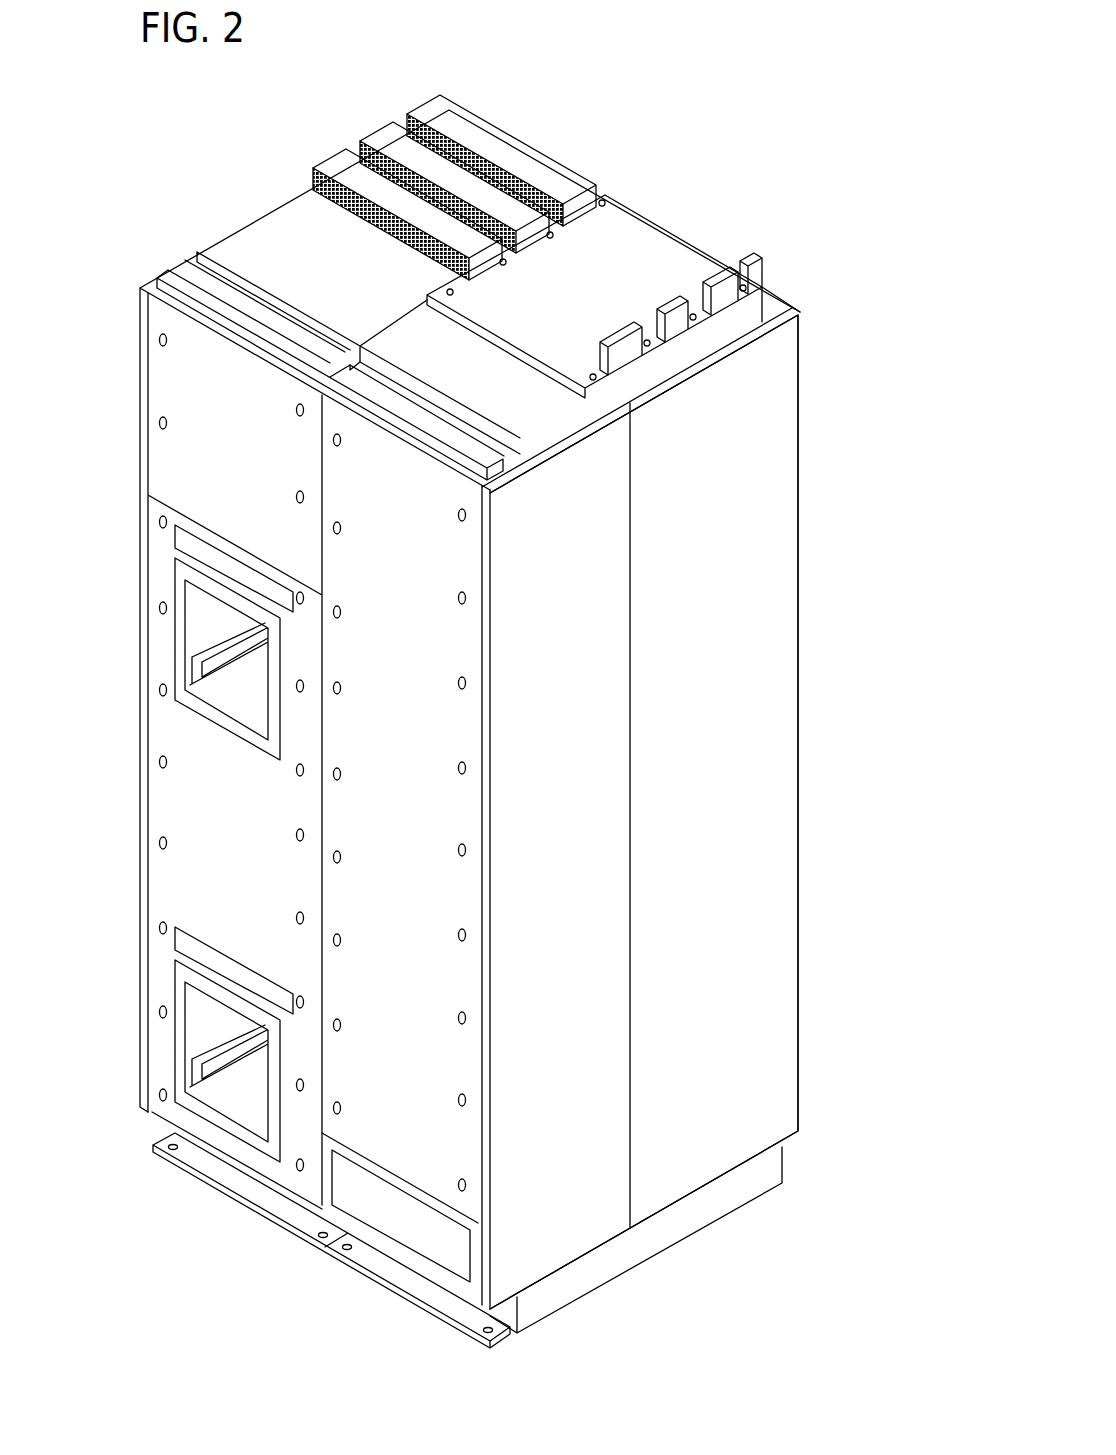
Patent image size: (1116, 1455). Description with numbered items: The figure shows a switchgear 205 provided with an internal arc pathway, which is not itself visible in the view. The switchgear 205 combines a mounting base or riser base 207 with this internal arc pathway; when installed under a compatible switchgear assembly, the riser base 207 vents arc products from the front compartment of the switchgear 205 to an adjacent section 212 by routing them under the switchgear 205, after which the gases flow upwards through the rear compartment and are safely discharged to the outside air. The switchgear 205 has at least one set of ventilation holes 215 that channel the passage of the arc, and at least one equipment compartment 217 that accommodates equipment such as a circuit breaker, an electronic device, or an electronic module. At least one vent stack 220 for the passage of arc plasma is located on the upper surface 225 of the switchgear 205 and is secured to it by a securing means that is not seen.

The switchgear 205 is at (467, 696).
The riser base 207 is at (228, 1196).
The adjacent section 212 is at (485, 976).
The ventilation holes 215 is at (492, 263).
The equipment compartment 217 is at (170, 751).
The vent stack 220 is at (423, 160).
The upper surface 225 is at (165, 271).